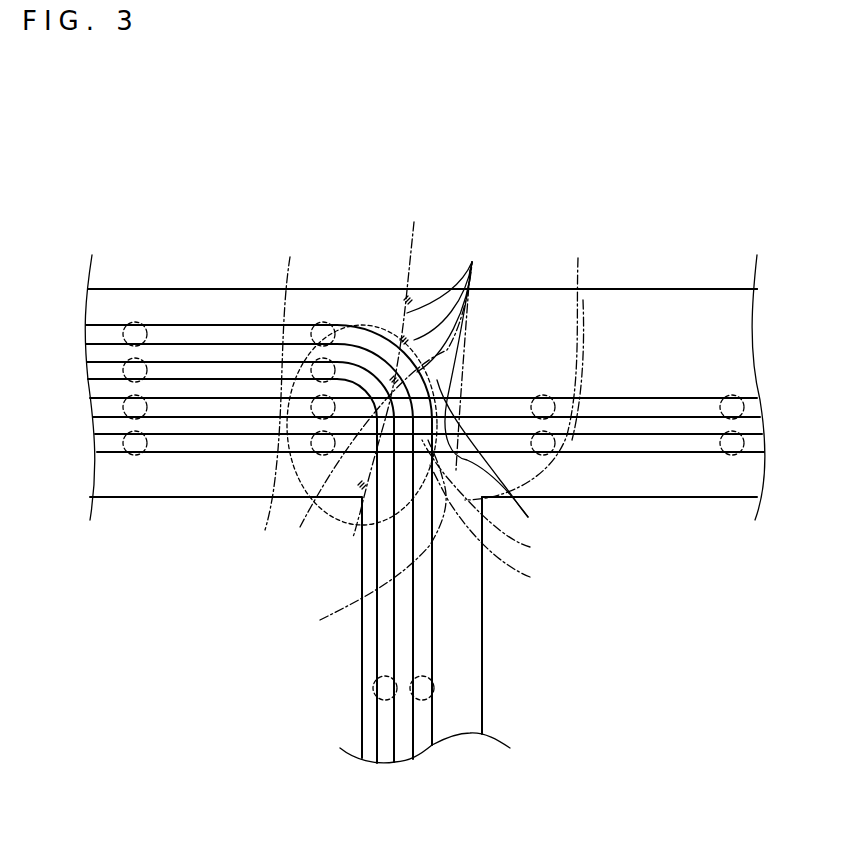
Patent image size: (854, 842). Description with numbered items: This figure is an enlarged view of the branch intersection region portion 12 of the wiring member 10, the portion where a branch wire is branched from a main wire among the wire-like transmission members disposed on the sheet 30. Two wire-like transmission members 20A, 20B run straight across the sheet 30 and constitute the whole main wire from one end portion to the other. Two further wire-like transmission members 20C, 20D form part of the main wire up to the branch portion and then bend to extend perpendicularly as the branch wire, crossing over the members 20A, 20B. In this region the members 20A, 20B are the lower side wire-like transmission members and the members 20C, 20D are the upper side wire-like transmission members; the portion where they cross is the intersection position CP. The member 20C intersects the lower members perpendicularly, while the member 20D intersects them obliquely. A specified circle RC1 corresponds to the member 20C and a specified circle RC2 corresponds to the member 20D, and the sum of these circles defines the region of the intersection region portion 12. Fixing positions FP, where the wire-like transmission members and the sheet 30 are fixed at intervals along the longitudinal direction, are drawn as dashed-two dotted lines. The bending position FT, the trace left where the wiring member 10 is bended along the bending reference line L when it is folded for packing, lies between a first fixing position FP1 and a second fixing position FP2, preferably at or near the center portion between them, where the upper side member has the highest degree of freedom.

The wiring member 10 is at (157, 152).
The branch intersection region portion 12 is at (372, 320).
The wire-like transmission member 20A is at (661, 443).
The wire-like transmission member 20B is at (647, 410).
The wire-like transmission member 20C is at (422, 642).
The wire-like transmission member 20D is at (383, 645).
The sheet 30 is at (710, 298).
The fixing position FP is at (419, 396).
The first fixing position FP1 is at (286, 382).
The second fixing position FP2 is at (339, 536).
The bending position FT is at (467, 377).
The intersection position CP is at (303, 542).
The specified circle RC1 is at (495, 500).
The specified circle RC2 is at (499, 528).
The bending reference line L is at (328, 577).